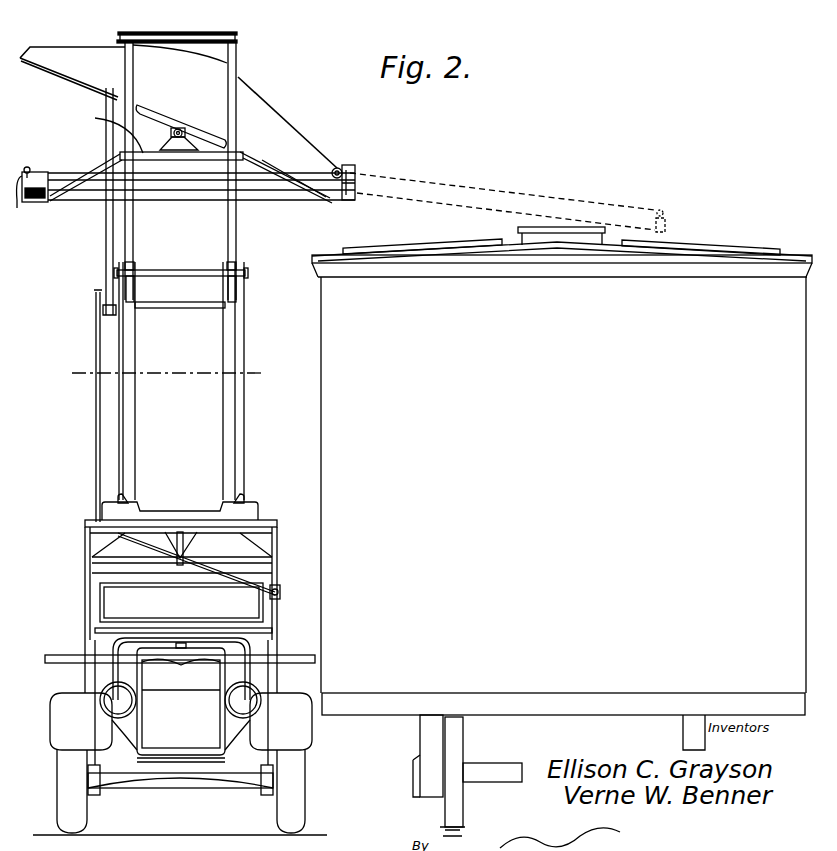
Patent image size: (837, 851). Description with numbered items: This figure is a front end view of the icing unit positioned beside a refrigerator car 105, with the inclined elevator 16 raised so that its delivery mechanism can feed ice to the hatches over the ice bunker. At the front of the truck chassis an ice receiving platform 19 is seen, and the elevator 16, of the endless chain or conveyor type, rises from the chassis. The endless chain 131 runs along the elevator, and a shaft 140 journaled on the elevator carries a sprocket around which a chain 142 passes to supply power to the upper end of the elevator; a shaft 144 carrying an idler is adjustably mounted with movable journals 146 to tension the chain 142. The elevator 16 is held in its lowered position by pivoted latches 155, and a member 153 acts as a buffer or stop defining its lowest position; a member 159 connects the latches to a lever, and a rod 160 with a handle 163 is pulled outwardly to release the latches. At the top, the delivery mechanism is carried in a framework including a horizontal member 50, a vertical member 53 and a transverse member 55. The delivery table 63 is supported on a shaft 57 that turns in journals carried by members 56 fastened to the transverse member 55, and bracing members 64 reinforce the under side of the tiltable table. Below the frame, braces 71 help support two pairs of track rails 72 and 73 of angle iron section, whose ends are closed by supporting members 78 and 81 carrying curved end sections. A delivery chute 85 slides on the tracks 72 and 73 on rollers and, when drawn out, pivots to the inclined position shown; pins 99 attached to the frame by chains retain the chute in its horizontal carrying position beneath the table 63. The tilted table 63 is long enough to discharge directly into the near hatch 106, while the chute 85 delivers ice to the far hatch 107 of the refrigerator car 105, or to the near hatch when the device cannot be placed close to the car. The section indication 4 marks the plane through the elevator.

The horizontal member 50 is at (238, 31).
The vertical member 53 is at (238, 44).
The delivery table 63 is at (84, 50).
The transverse member 55 is at (100, 118).
The bracing member 64 is at (151, 108).
The shaft 57 is at (180, 129).
The member 56 is at (192, 147).
The track rail 73 is at (180, 202).
The delivery chute 85 is at (80, 160).
The track rail 72 is at (266, 183).
The brace 71 is at (313, 198).
The supporting member 78 is at (352, 200).
The supporting member 81 is at (17, 208).
The pin 99 is at (341, 170).
The chain 142 is at (107, 242).
The shaft 144 is at (192, 272).
The movable journal 146 is at (236, 290).
The shaft 140 is at (180, 308).
The inclined elevator 16 is at (222, 404).
The section line 4- 4 is at (166, 374).
The endless chain 131 is at (96, 425).
The latch 155 is at (238, 498).
The member 153 is at (255, 512).
The ice receiving platform 19 is at (52, 655).
The member 159 is at (201, 548).
The rod 160 is at (207, 577).
The handle 163 is at (282, 590).
The refrigerator car 105 is at (321, 462).
The near hatch 106 is at (393, 248).
The far hatch 107 is at (716, 249).